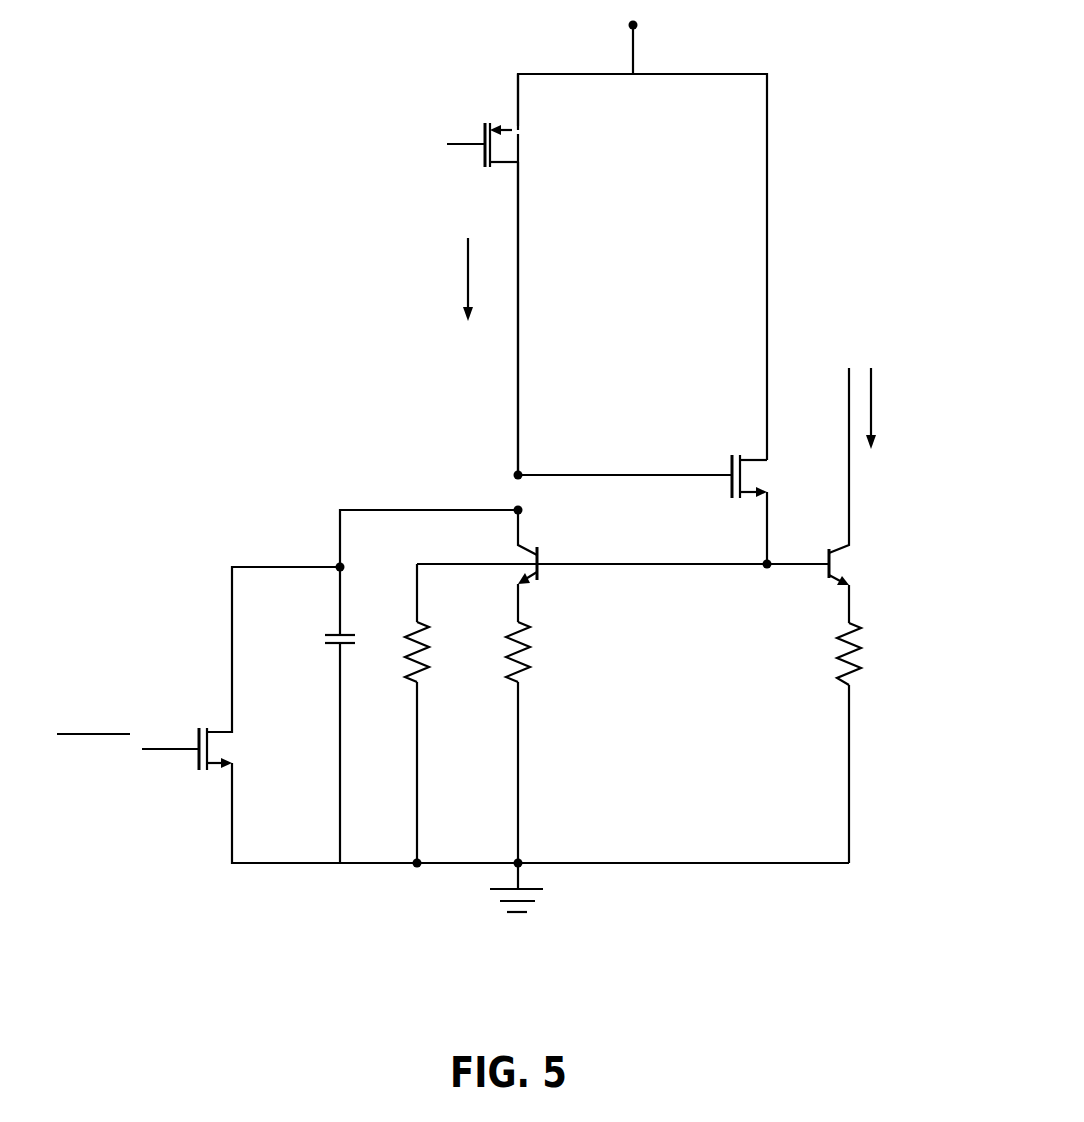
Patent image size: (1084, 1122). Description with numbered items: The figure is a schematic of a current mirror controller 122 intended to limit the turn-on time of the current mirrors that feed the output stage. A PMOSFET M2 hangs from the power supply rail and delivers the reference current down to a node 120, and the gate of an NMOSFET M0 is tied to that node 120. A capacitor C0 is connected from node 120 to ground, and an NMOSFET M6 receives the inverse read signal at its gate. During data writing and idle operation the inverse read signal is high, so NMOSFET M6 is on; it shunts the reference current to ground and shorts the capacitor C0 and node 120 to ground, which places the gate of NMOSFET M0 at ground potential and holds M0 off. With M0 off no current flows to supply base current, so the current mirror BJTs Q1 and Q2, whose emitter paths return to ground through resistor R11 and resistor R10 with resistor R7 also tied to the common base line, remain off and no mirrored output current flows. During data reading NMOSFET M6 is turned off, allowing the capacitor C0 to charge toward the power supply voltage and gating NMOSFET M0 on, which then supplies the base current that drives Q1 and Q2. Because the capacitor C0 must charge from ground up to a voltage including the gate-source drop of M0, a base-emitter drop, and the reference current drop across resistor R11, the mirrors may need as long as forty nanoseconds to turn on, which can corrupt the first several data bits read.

The node 120 is at (518, 475).
The current mirror controller 122 is at (880, 200).
The PMOSFET M2 is at (486, 153).
The NMOSFET M0 is at (744, 478).
The NMOSFET M6 is at (201, 757).
The current mirror BJT Q1 is at (554, 557).
The current mirror BJT Q2 is at (867, 476).
The resistor R7 is at (441, 652).
The resistor R11 is at (547, 652).
The resistor R10 is at (880, 654).
The capacitor C0 is at (318, 639).